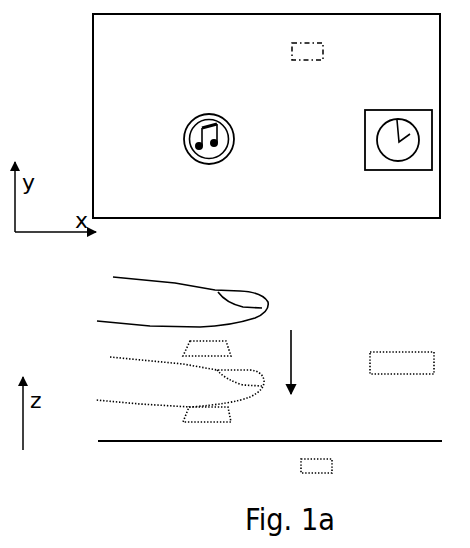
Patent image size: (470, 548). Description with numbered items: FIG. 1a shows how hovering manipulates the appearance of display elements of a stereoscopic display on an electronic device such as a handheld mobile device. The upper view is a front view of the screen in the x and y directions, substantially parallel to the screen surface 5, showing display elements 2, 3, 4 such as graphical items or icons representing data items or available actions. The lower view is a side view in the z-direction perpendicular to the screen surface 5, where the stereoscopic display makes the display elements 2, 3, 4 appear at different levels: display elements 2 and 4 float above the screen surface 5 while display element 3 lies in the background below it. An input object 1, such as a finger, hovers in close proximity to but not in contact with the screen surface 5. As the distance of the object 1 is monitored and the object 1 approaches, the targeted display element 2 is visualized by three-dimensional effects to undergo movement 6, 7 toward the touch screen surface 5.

The input object 1 is at (128, 292).
The display element 2 is at (226, 156).
The display element 3 is at (315, 57).
The display element 4 is at (380, 163).
The screen surface 5 is at (138, 443).
The movement 6 is at (292, 345).
The movement 7 is at (238, 418).